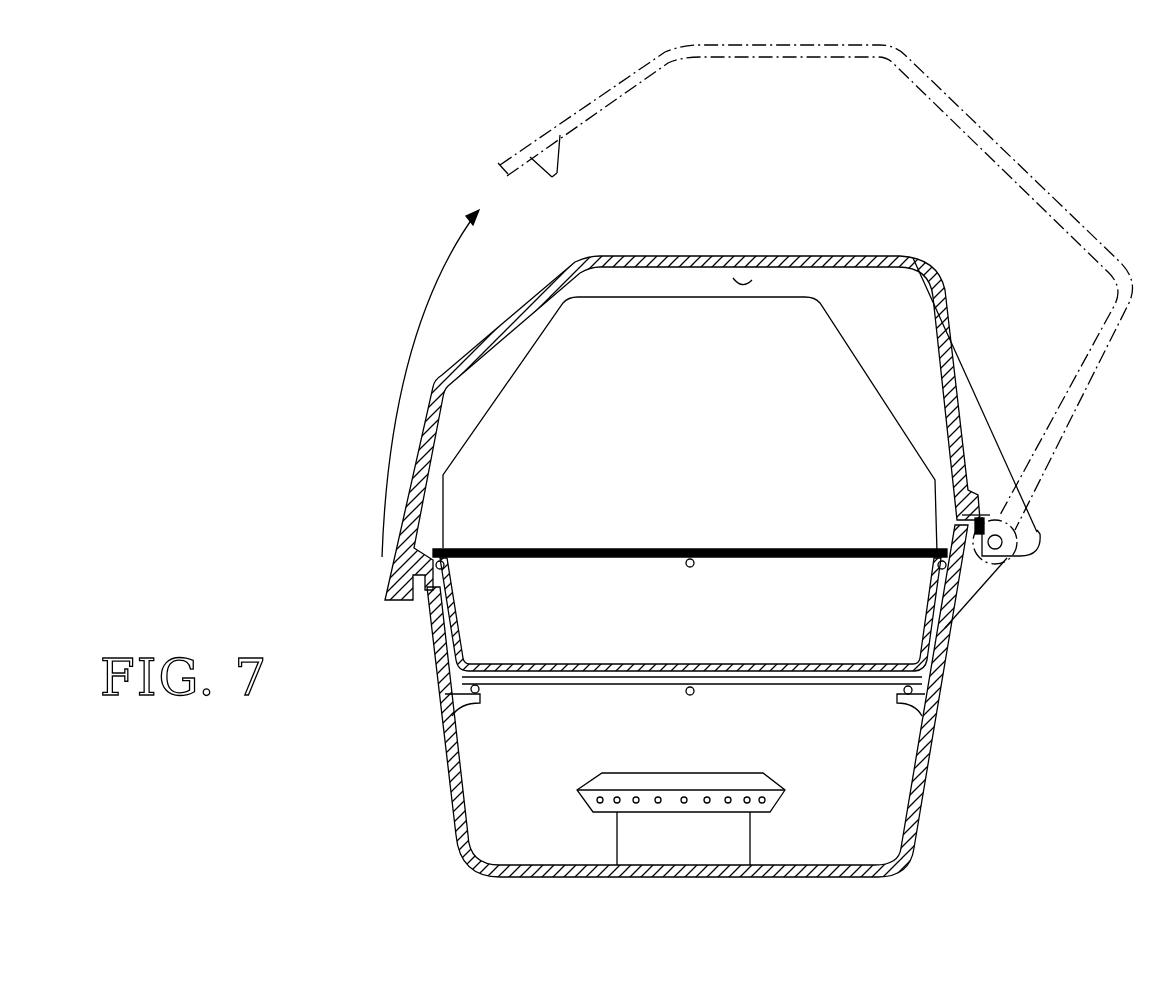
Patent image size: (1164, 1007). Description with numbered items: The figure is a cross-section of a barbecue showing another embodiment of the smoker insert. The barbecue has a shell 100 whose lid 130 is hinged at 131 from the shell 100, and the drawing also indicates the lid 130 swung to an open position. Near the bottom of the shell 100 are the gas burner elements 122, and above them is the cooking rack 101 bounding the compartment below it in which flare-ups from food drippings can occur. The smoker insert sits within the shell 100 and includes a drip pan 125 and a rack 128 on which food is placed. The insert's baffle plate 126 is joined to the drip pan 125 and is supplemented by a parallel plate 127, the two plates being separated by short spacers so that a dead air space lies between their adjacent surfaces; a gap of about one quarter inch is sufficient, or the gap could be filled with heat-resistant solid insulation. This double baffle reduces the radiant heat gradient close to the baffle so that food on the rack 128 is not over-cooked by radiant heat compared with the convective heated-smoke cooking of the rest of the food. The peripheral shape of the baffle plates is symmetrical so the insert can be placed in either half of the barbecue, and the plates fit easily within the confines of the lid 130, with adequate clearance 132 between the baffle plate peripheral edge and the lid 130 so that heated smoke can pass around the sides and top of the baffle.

The barbecue shell 100 is at (940, 735).
The cooking rack 101 is at (858, 688).
The gas burner elements 122 is at (783, 803).
The drip pan 125 is at (948, 652).
The baffle plate 126 is at (893, 407).
The parallel plate 127 is at (762, 423).
The rack 128 is at (497, 551).
The lid 130 is at (890, 256).
The hinge 131 is at (1003, 540).
The clearance 132 is at (745, 280).